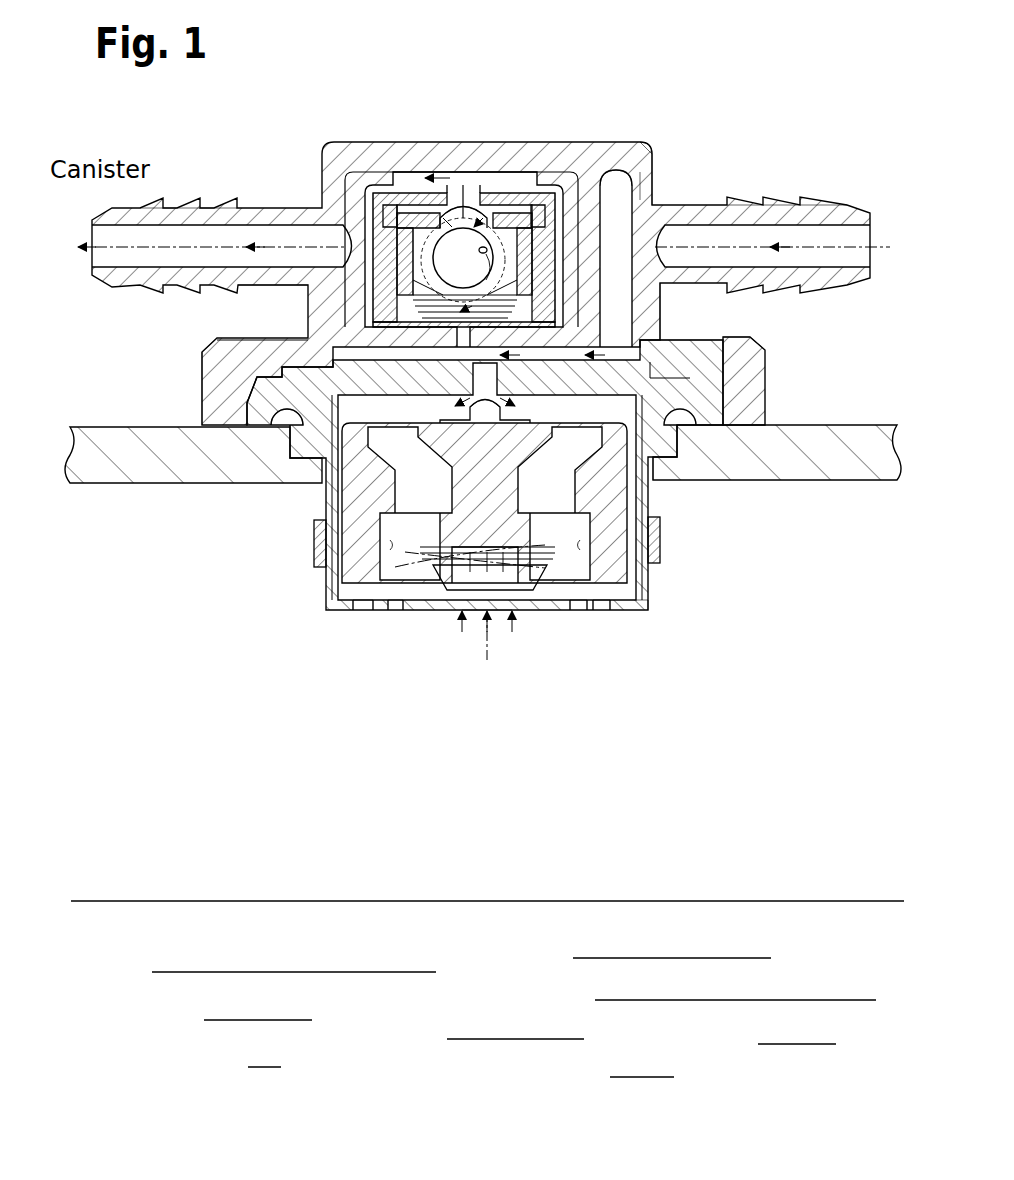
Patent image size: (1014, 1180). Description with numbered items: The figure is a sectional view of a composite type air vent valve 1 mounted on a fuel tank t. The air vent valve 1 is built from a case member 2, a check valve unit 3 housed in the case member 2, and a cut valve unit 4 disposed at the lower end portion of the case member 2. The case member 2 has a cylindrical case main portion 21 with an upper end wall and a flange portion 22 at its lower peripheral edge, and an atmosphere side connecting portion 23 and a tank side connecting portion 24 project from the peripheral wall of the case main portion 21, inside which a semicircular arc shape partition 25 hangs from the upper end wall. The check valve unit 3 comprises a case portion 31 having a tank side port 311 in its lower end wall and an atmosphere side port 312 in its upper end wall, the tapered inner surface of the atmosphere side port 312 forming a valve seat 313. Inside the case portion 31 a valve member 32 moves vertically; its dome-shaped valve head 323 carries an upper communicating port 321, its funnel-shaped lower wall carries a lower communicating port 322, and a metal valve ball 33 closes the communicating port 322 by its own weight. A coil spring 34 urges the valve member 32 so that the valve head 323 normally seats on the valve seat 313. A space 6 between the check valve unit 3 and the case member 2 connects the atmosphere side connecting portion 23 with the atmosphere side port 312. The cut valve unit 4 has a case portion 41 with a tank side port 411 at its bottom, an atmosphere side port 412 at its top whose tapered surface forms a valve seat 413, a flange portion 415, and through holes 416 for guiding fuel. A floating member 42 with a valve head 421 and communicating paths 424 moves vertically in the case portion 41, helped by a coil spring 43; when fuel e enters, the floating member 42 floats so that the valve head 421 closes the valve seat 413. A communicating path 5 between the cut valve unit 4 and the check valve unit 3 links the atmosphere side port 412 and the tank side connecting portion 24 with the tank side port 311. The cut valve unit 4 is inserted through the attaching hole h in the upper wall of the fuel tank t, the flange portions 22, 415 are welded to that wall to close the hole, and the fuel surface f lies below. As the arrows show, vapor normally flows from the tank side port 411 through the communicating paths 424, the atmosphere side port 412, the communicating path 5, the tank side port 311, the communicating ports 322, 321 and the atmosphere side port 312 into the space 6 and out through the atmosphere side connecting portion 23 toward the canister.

The air vent valve 1 is at (650, 118).
The case member 2 is at (362, 142).
The check valve unit 3 is at (535, 186).
The cut valve unit 4 is at (655, 602).
The communicating path 5 is at (217, 340).
The space 6 is at (448, 248).
The case main portion 21 is at (405, 168).
The flange portion 22 is at (215, 374).
The atmosphere side connecting portion 23 is at (210, 206).
The tank side connecting portion 24 is at (820, 292).
The partition 25 is at (653, 156).
The case portion 31 is at (642, 198).
The valve member 32 is at (360, 185).
The valve ball 33 is at (616, 180).
The coil spring 34 is at (640, 302).
The case portion 41 is at (752, 346).
The floating member 42 is at (560, 517).
The coil spring 43 is at (440, 580).
The tank side port 311 is at (398, 294).
The atmosphere side port 312 is at (440, 185).
The valve seat 313 is at (500, 205).
The communicating port 321 is at (466, 184).
The communicating port 322 is at (300, 292).
The valve head 323 is at (385, 172).
The tank side port 411 is at (487, 660).
The atmosphere side port 412 is at (314, 530).
The valve seat 413 is at (650, 608).
The flange portion 415 is at (287, 420).
The through holes 416 is at (420, 611).
The valve head 421 is at (400, 560).
The communicating paths 424 is at (660, 535).
The fuel tank t is at (832, 424).
The attaching hole h is at (690, 482).
The fuel e is at (392, 946).
The fuel surface f is at (684, 900).